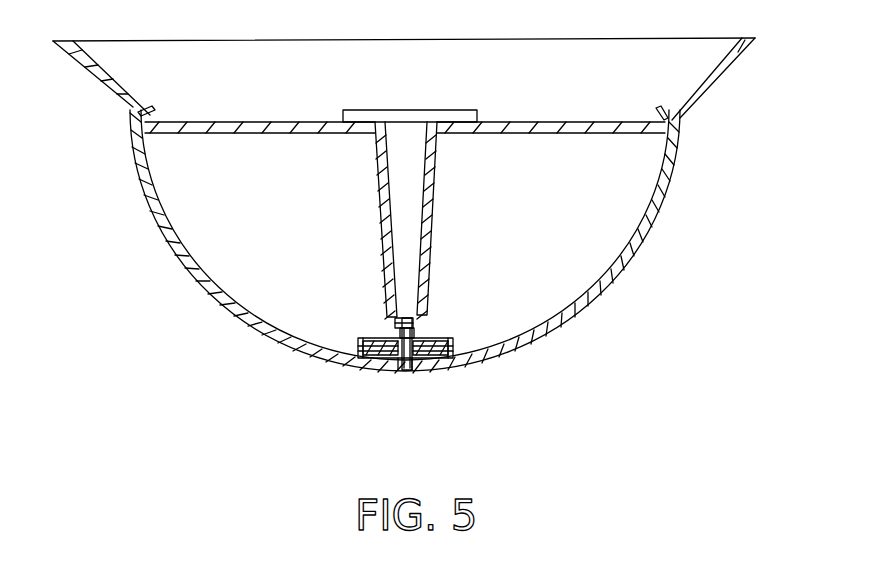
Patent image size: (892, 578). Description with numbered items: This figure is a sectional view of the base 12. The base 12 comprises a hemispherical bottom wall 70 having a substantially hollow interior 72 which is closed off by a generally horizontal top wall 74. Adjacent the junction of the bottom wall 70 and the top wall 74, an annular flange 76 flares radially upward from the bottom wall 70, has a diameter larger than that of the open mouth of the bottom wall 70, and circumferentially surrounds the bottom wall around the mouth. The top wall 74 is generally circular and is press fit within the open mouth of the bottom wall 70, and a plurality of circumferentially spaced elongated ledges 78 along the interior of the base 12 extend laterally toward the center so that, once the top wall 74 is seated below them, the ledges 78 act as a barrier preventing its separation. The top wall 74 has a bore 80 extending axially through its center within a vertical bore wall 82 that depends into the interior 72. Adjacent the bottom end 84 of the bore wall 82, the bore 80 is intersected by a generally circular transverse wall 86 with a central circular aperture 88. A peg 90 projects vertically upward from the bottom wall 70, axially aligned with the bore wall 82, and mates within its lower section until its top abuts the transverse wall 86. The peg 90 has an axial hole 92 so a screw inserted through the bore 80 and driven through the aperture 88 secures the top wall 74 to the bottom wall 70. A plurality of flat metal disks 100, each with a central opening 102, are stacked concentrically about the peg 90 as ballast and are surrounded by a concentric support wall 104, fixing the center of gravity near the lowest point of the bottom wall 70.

The base 12 is at (752, 198).
The bottom wall 70 is at (177, 265).
The interior 72 is at (291, 239).
The top wall 74 is at (223, 127).
The annular flange 76 is at (95, 73).
The ledges 78 is at (125, 117).
The bore 80 is at (405, 178).
The bore wall 82 is at (430, 240).
The bottom end 84 is at (414, 332).
The transverse wall 86 is at (392, 322).
The aperture 88 is at (415, 316).
The peg 90 is at (397, 362).
The axial hole 92 is at (398, 368).
The flat metal disks 100 is at (440, 368).
The central opening 102 is at (412, 368).
The support wall 104 is at (457, 338).